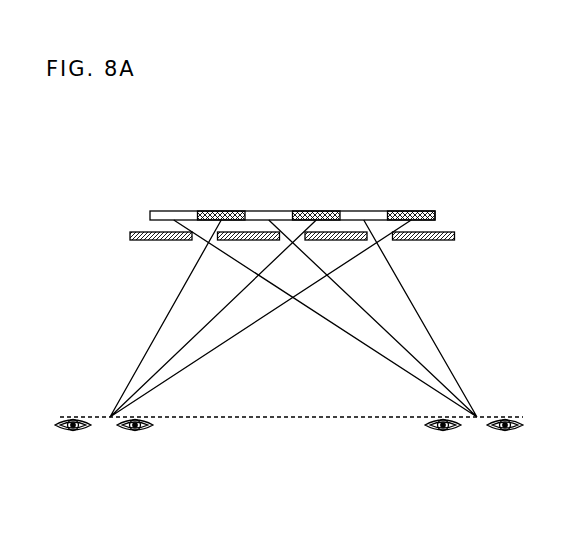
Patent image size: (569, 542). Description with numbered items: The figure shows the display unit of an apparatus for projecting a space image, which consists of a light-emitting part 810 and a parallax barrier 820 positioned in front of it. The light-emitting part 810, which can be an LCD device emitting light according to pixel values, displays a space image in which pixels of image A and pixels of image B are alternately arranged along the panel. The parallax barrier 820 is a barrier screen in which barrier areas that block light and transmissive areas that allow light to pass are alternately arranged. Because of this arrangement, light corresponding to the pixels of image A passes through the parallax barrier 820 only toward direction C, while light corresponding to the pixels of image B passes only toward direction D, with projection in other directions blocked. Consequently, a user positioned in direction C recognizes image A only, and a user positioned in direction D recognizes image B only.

The light-emitting part 810 is at (435, 213).
The parallax barrier 820 is at (455, 237).
The image "A" A is at (172, 210).
The image "B" B is at (218, 210).
The direction "C" C is at (474, 446).
The direction "D" D is at (104, 446).